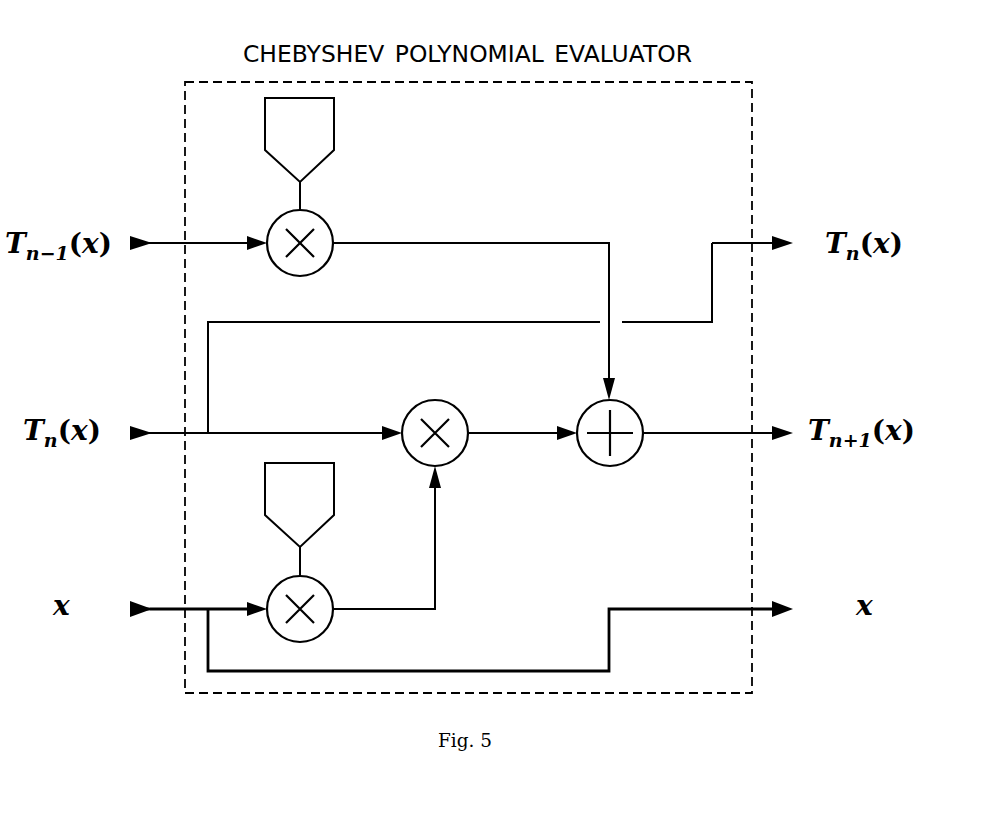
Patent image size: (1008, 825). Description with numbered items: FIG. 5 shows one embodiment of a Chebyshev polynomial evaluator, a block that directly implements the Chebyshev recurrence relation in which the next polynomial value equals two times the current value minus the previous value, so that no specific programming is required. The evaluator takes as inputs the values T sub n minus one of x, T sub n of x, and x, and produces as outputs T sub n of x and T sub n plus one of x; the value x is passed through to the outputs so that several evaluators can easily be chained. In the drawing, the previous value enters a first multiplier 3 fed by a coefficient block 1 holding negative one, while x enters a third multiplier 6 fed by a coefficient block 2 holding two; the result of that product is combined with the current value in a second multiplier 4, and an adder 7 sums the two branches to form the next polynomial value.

The negative-one coefficient block 1 is at (299, 154).
The coefficient two block 2 is at (299, 519).
The first multiplier 3 is at (300, 243).
The second multiplier 4 is at (435, 433).
The third multiplier 6 is at (300, 609).
The adder 7 is at (610, 433).